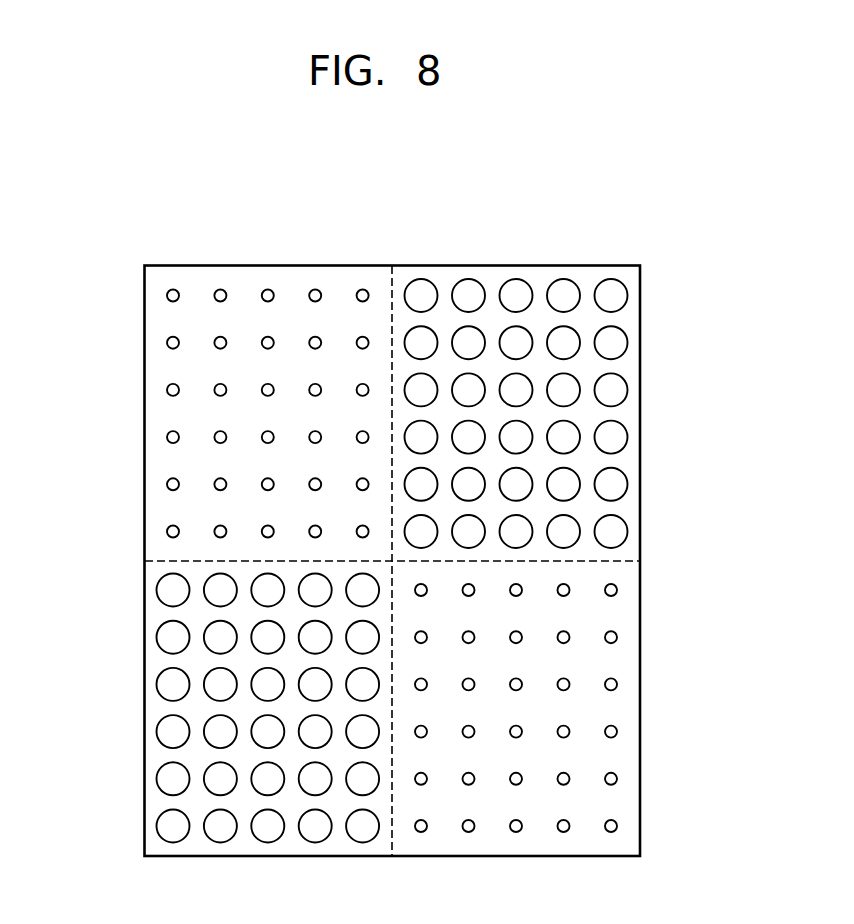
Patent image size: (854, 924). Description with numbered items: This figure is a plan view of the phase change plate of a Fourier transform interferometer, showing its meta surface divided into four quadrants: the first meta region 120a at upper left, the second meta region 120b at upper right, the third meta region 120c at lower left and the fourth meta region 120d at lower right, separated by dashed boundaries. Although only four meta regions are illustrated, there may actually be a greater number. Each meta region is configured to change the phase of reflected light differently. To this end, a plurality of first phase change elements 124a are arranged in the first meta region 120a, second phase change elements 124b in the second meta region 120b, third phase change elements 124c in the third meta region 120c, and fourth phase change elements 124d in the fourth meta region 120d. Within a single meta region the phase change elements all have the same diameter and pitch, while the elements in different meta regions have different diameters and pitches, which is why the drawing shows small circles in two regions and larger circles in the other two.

The first meta region 120a is at (194, 277).
The second meta region 120b is at (590, 277).
The third meta region 120c is at (197, 840).
The fourth meta region 120d is at (588, 840).
The first phase change elements 124a is at (167, 296).
The second phase change elements 124b is at (613, 292).
The third phase change elements 124c is at (170, 826).
The fourth phase change elements 124d is at (612, 826).